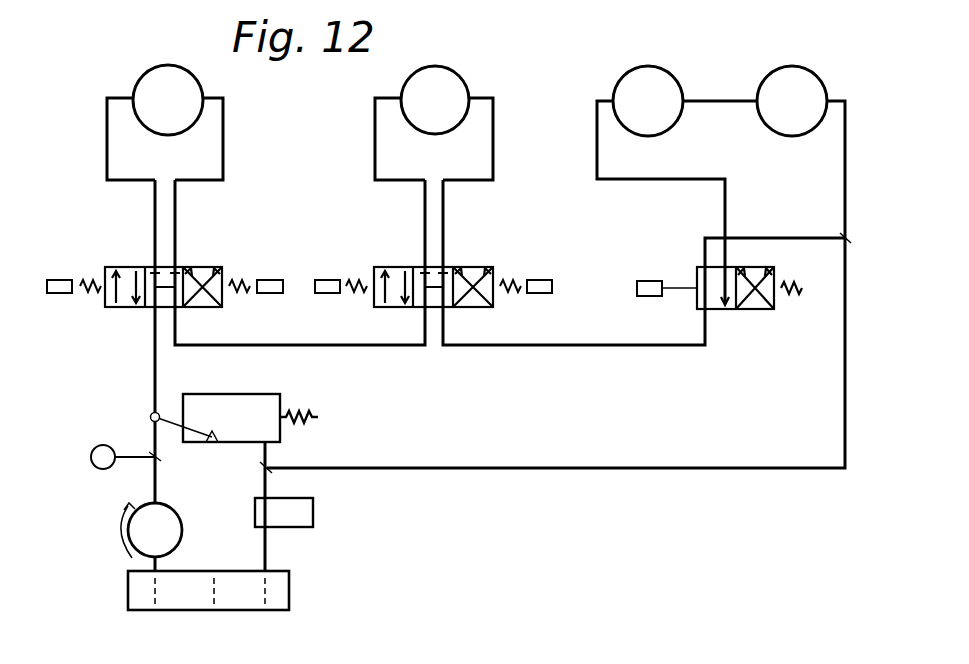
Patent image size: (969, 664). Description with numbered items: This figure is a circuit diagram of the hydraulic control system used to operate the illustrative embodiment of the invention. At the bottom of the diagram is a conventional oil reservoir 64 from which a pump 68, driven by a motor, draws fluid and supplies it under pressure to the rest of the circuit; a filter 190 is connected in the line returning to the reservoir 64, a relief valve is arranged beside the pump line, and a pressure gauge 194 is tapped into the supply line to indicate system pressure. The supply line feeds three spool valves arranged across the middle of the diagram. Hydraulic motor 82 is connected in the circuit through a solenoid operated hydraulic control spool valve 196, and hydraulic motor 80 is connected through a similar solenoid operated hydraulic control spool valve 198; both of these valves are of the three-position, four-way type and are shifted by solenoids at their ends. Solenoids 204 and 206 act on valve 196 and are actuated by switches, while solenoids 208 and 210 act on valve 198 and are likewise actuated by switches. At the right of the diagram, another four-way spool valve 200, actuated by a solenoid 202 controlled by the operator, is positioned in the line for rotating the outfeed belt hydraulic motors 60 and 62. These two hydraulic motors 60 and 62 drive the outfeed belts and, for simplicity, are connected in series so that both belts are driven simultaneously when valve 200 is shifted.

The hydraulic motor 60 is at (668, 88).
The hydraulic motor 62 is at (805, 88).
The oil reservoir 64 is at (228, 598).
The pump 68 is at (167, 512).
The hydraulic motor 80 is at (455, 95).
The hydraulic motor 82 is at (164, 80).
The filter 190 is at (308, 513).
The pressure gauge 194 is at (100, 445).
The solenoid operated hydraulic control spool valve 196 is at (180, 277).
The solenoid operated hydraulic control spool valve 198 is at (448, 280).
The four-way spool valve 200 is at (713, 310).
The solenoid 202 is at (645, 281).
The solenoid 204 is at (66, 294).
The solenoid 206 is at (266, 294).
The solenoid 208 is at (331, 294).
The solenoid 210 is at (538, 294).